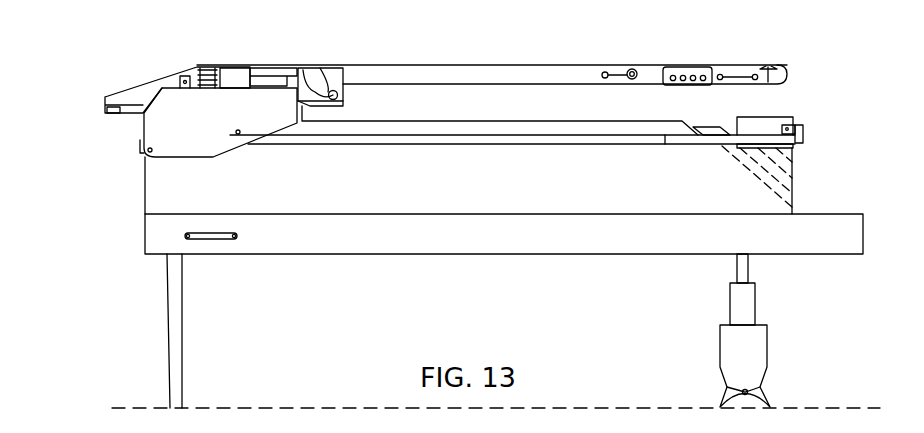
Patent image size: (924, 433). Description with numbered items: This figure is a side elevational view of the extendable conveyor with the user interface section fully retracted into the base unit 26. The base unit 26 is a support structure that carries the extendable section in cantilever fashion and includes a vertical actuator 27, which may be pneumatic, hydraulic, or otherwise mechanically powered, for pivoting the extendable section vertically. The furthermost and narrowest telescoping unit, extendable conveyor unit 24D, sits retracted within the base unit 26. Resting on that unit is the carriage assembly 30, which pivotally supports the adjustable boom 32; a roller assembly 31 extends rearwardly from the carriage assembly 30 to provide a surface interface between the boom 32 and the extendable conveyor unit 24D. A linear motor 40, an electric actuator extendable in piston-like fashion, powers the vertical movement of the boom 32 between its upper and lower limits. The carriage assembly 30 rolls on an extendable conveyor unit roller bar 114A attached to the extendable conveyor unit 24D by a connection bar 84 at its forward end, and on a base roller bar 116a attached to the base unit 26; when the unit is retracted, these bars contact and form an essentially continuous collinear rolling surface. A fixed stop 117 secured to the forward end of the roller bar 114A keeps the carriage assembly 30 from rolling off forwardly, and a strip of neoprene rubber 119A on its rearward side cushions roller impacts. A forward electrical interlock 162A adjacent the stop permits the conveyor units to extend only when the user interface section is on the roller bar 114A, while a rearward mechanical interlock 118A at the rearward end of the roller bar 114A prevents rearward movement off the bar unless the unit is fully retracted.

The base unit 26 is at (368, 257).
The vertical actuator 27 is at (735, 297).
The carriage assembly 30 is at (218, 143).
The roller assembly 31 is at (150, 94).
The linear motor 40 is at (240, 77).
The adjustable boom 32 is at (350, 75).
The extendable conveyor unit 24D is at (363, 128).
The base roller bar 116a is at (382, 137).
The rearward mechanical interlock 118A is at (665, 136).
The connection bar 84 is at (760, 120).
The forward electrical interlock 162A is at (788, 127).
The fixed stop 117 is at (801, 129).
The extendable conveyor unit roller bar 114A is at (728, 138).
The strip of neoprene rubber 119A is at (793, 137).